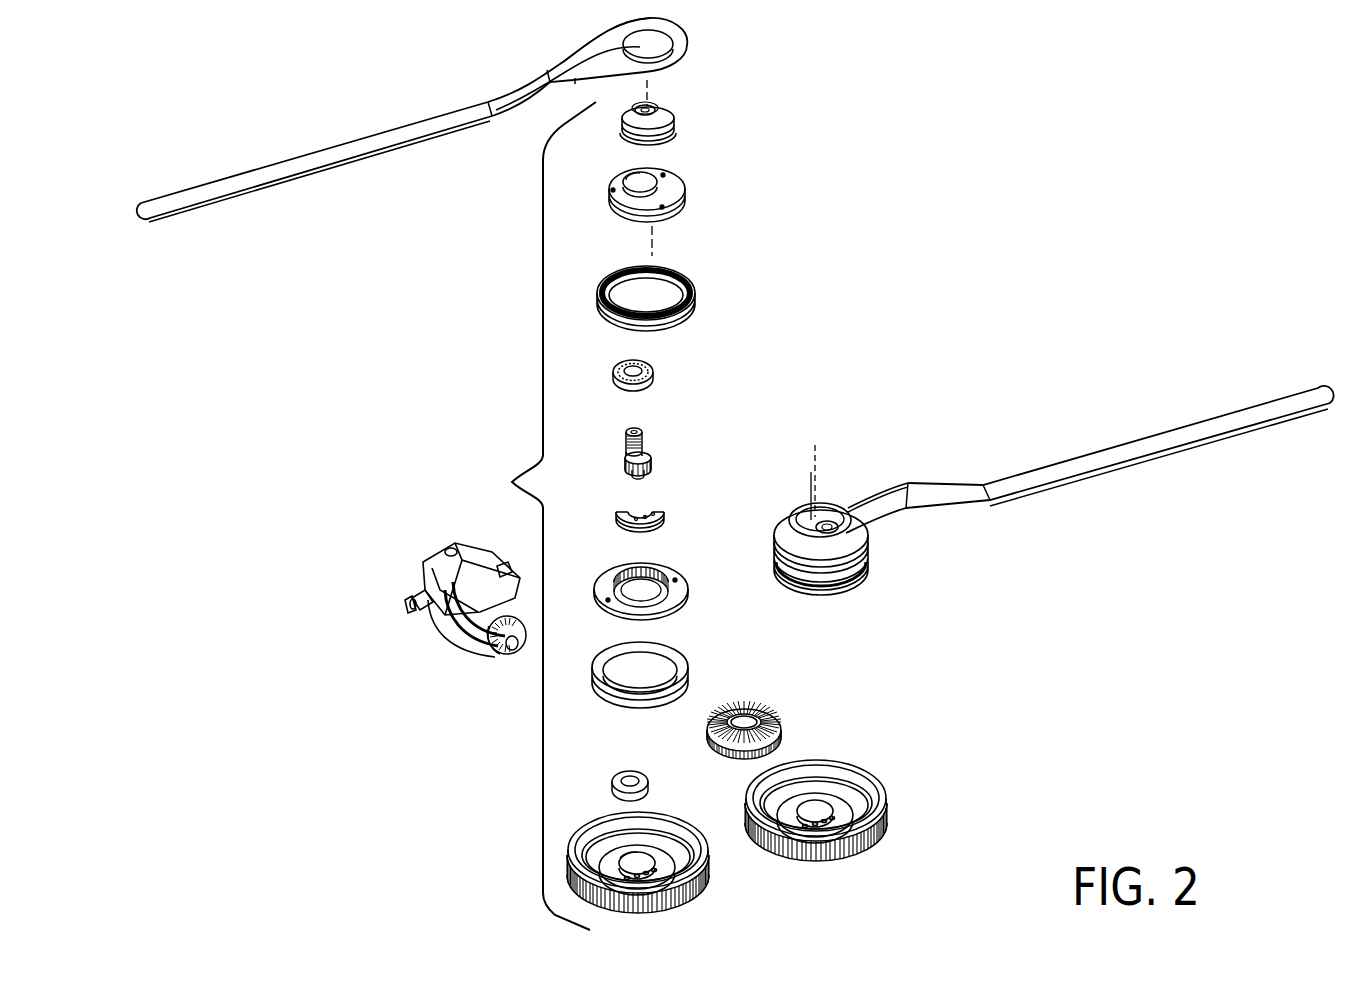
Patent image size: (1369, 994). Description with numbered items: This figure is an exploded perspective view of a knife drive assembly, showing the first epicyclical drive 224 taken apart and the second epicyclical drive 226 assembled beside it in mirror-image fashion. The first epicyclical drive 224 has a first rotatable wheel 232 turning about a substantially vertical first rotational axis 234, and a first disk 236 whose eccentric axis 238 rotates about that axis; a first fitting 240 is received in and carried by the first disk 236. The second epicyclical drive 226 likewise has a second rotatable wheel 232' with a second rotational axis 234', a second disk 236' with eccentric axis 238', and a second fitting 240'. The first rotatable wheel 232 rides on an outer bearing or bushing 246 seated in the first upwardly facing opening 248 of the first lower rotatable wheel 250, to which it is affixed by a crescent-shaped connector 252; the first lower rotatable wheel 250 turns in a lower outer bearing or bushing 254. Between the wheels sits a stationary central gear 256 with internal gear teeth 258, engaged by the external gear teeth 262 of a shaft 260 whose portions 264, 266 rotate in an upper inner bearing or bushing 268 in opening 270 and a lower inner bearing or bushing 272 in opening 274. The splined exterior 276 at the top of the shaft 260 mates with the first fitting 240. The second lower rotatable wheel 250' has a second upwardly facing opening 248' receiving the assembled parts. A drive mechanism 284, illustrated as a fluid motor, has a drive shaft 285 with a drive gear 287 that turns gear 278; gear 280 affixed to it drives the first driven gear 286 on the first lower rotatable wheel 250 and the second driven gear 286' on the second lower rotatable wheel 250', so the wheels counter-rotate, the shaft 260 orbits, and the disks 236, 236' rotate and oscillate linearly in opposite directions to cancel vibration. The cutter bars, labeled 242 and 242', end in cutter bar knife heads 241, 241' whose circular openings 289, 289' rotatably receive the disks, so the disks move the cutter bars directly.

The first epicyclical drive 224 is at (532, 516).
The second epicyclical drive 226 is at (842, 521).
The first rotatable wheel 232 is at (661, 201).
The second rotatable wheel 232' is at (818, 574).
The first vertical rotational axis 234 is at (696, 241).
The second vertical rotational axis 234' is at (773, 489).
The first disk 236 is at (667, 131).
The second disk 236' is at (843, 521).
The first vertical eccentric axis 238 is at (696, 87).
The second vertical eccentric axis 238' is at (862, 456).
The first fitting 240 is at (615, 131).
The second fitting 240' is at (851, 584).
The cutter bar knife head 241 is at (570, 40).
The cutter bar knife head 241' is at (911, 466).
The handle 242 is at (452, 119).
The handle 242' is at (1031, 447).
The outer bearing or bushing 246 is at (695, 297).
The first upwardly facing opening 248 is at (666, 857).
The second upwardly facing opening 248' is at (852, 823).
The first lower rotatable wheel 250 is at (687, 874).
The second lower rotatable wheel 250' is at (868, 830).
The crescent-shaped connector 252 is at (660, 520).
The lower outer bearing or bushing 254 is at (690, 665).
The stationary central gear 256 is at (619, 592).
The internal gear teeth 258 is at (645, 575).
The shaft 260 is at (738, 402).
The external gear teeth 262 is at (653, 461).
The shaft portion 264 is at (644, 445).
The shaft portion 266 is at (630, 470).
The upper inner bearing or bushing 268 is at (655, 367).
The opening 270 is at (626, 174).
The lower inner bearing or bushing 272 is at (635, 762).
The opening 274 is at (628, 852).
The splined or toothed exterior 276 is at (645, 428).
The gear 278 is at (781, 714).
The gear 280 is at (788, 737).
The drive mechanism 284 is at (439, 625).
The drive shaft 285 is at (475, 628).
The first driven gear 286 is at (659, 895).
The second driven gear 286' is at (829, 854).
The drive gear 287 is at (497, 654).
The circular opening 289 is at (695, 39).
The circular opening 289' is at (789, 513).